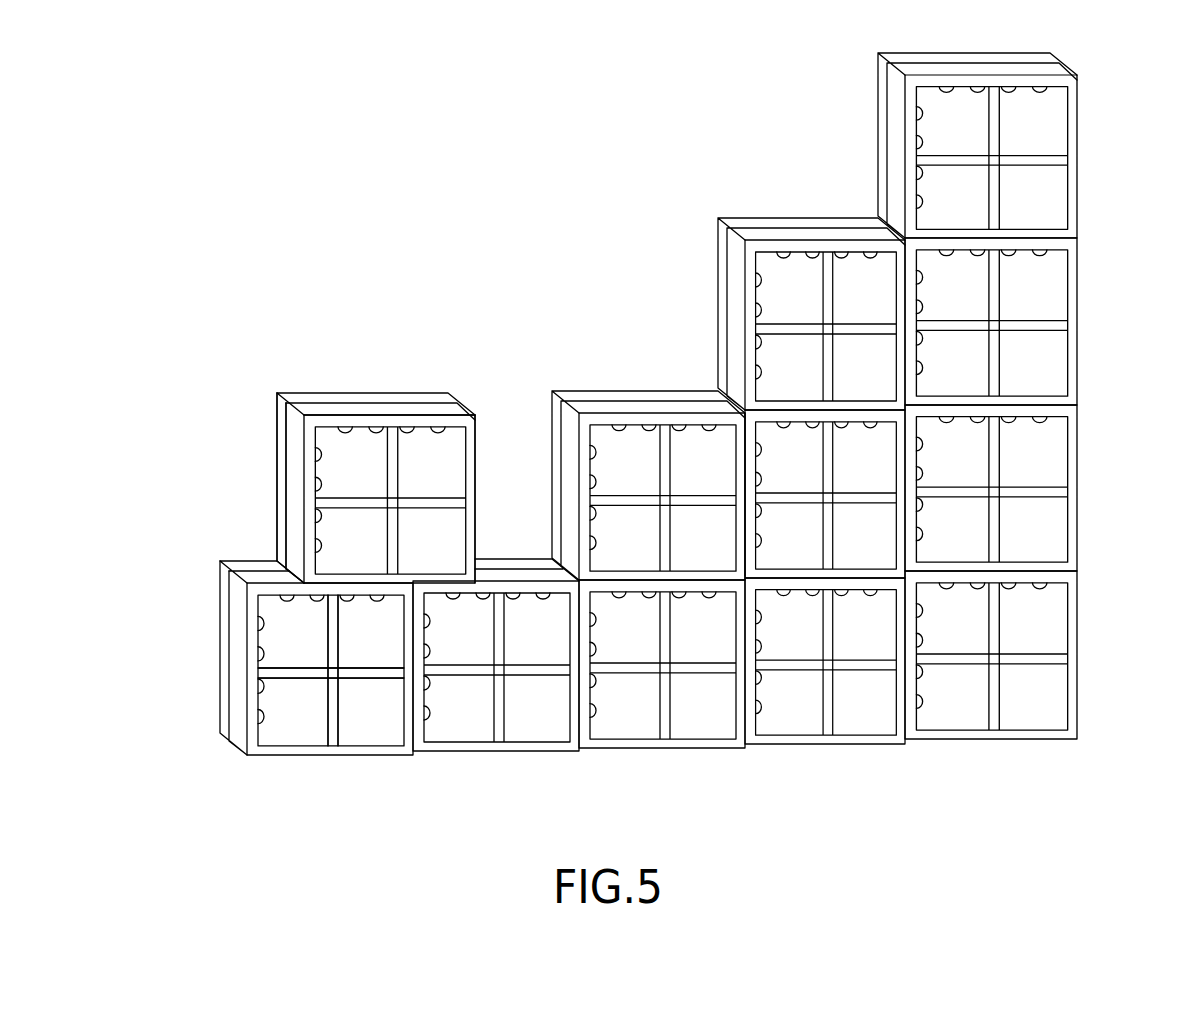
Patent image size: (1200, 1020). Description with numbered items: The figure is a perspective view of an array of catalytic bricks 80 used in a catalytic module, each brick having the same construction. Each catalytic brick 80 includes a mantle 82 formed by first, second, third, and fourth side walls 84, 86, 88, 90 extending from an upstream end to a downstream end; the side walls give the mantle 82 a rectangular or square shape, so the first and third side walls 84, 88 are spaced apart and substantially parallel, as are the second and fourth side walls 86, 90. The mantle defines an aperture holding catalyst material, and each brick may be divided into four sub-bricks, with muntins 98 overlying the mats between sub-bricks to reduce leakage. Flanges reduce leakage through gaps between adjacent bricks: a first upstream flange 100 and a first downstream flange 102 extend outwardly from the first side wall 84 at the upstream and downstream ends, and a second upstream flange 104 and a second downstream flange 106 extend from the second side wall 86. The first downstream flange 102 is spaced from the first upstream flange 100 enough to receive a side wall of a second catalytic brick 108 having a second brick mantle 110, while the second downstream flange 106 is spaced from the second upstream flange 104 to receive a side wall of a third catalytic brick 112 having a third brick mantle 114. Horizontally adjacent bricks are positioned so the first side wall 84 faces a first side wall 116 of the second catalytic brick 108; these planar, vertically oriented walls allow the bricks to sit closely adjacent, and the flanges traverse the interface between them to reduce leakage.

The catalytic brick 80 is at (1048, 133).
The mantle 82 is at (340, 408).
The first side wall 84 is at (297, 495).
The second side wall 86 is at (397, 408).
The third side wall 88 is at (478, 486).
The fourth side wall 90 is at (345, 585).
The muntins 98 is at (333, 710).
The first upstream flange 100 is at (315, 542).
The first downstream flange 102 is at (282, 441).
The second upstream flange 104 is at (457, 418).
The second downstream flange 106 is at (288, 397).
The second catalytic brick 108 is at (625, 455).
The second brick mantle 110 is at (600, 400).
The third catalytic brick 112 is at (820, 313).
The third brick mantle 114 is at (762, 232).
The first side wall of the second catalytic brick 116 is at (743, 543).